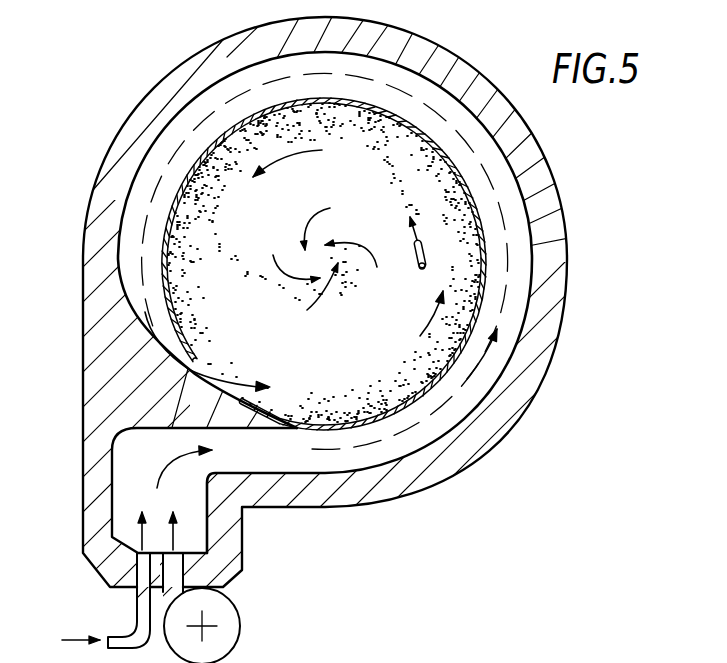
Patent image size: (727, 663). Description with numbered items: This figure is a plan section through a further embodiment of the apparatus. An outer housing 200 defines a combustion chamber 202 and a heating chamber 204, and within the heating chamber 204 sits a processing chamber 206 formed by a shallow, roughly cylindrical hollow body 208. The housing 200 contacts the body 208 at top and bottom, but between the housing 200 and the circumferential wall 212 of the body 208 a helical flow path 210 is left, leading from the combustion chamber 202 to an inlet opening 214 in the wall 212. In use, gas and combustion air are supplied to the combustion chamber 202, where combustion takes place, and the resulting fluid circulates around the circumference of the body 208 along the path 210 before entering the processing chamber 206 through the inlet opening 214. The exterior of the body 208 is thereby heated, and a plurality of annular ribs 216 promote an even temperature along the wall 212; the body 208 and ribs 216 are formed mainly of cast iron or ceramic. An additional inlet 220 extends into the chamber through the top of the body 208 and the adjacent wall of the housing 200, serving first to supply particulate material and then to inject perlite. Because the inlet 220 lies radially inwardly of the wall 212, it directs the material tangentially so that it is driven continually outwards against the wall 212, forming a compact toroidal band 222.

The outer housing 200 is at (92, 495).
The combustion chamber 202 is at (127, 449).
The heating chamber 204 is at (172, 356).
The processing chamber 206 is at (205, 290).
The hollow body 208 is at (158, 238).
The helical flow path 210 is at (158, 157).
The circumferential wall 212 is at (215, 137).
The inlet opening 214 is at (204, 365).
The annular ribs 216 is at (232, 107).
The additional inlet 220 is at (417, 259).
The compact toroidal band 222 is at (465, 312).